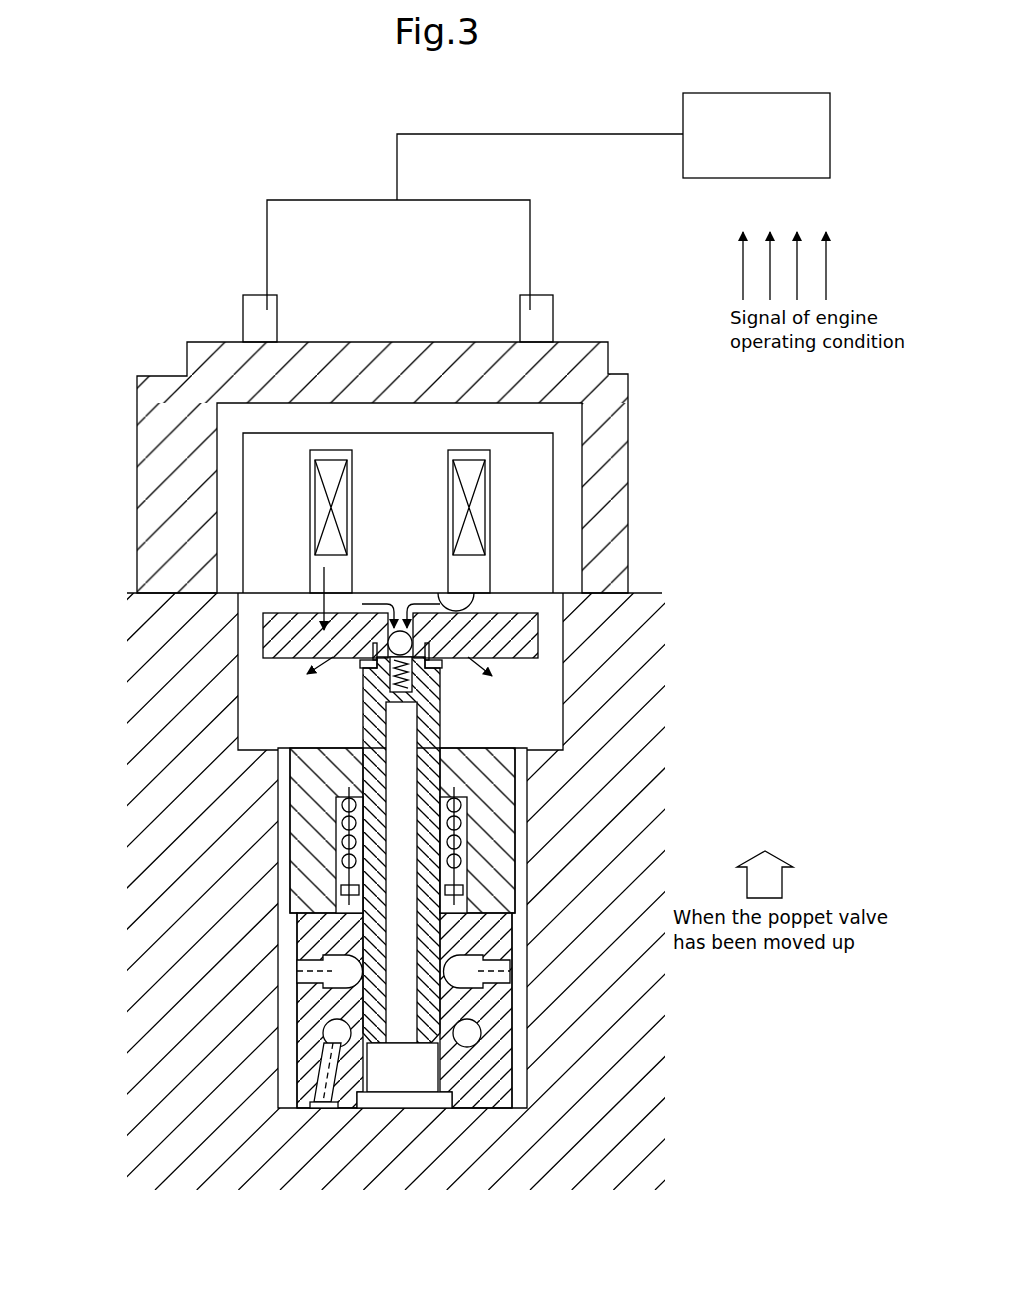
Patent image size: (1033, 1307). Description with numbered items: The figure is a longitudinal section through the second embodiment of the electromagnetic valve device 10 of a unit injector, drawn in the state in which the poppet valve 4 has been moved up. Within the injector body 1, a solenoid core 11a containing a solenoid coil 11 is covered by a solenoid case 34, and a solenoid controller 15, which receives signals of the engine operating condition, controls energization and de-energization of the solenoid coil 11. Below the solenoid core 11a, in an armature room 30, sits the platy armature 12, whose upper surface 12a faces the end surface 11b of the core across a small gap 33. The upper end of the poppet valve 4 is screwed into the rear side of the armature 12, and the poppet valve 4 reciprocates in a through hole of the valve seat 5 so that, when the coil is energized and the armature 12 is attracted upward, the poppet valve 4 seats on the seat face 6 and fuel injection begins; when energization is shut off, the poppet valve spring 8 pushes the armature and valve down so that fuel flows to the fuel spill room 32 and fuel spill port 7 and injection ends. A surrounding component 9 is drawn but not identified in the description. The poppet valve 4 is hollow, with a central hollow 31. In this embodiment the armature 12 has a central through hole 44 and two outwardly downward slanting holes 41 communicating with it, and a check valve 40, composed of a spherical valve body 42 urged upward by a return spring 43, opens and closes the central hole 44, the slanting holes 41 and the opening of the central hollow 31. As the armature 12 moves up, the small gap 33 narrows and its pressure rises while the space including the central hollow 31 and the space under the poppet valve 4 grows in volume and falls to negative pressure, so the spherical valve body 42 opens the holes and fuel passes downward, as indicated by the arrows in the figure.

The injector body 1 is at (600, 1133).
The poppet valve 4 is at (373, 930).
The valve seat 5 is at (493, 1047).
The seat face 6 is at (327, 1022).
The fuel spill port 7 is at (490, 972).
The poppet valve spring 8 is at (460, 858).
The sleeve 9 is at (303, 830).
The electromagnetic valve device 10 is at (576, 334).
The solenoid coil 11 is at (482, 496).
The solenoid core 11a is at (525, 507).
The end surface 11b is at (483, 590).
The armature 12 is at (527, 637).
The upper surface 12a is at (282, 597).
The solenoid controller 15 is at (756, 135).
The armature room 30 is at (295, 710).
The central hollow 31 is at (403, 1030).
The fuel spill room 32 is at (343, 982).
The small gap 33 is at (303, 605).
The solenoid case 34 is at (590, 363).
The check valve 40 is at (490, 612).
The slanting holes 41 is at (417, 638).
The spherical valve body 42 is at (263, 640).
The return spring 43 is at (442, 667).
The central through hole 44 is at (395, 607).